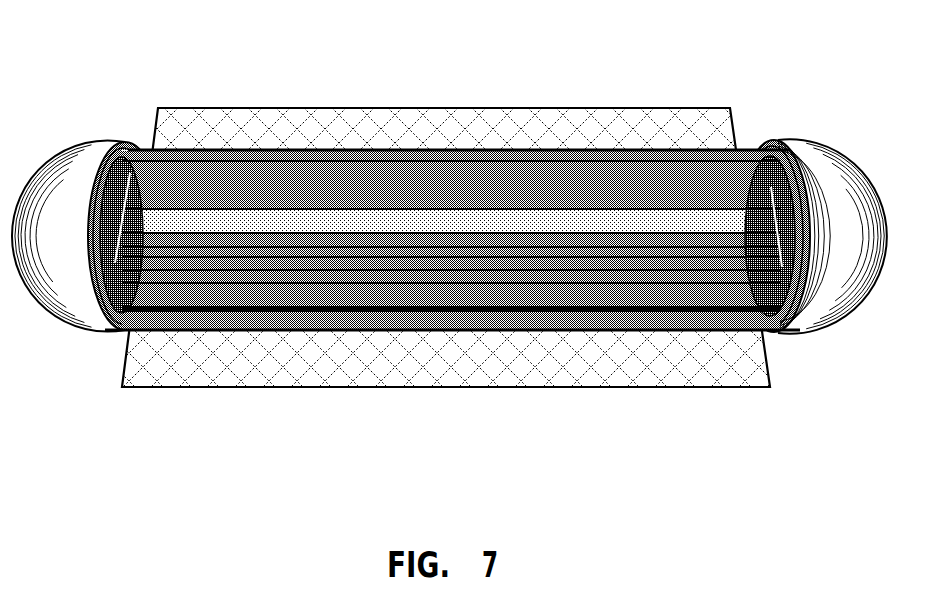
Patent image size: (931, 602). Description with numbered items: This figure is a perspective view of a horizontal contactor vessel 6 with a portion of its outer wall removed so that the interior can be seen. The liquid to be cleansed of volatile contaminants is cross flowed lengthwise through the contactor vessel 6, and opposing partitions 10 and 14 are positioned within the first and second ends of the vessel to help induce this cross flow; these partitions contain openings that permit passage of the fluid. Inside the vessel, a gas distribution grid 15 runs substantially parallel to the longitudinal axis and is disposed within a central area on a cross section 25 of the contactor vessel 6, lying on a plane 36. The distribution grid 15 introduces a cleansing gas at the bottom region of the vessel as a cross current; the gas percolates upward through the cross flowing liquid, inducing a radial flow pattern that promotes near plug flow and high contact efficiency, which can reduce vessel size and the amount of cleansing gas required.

The horizontal contactor vessel 6 is at (193, 152).
The partition 10 is at (130, 155).
The partition 14 is at (780, 163).
The gas distribution grid 15 is at (650, 252).
The cross section 25 is at (268, 222).
The plane 36 is at (419, 132).